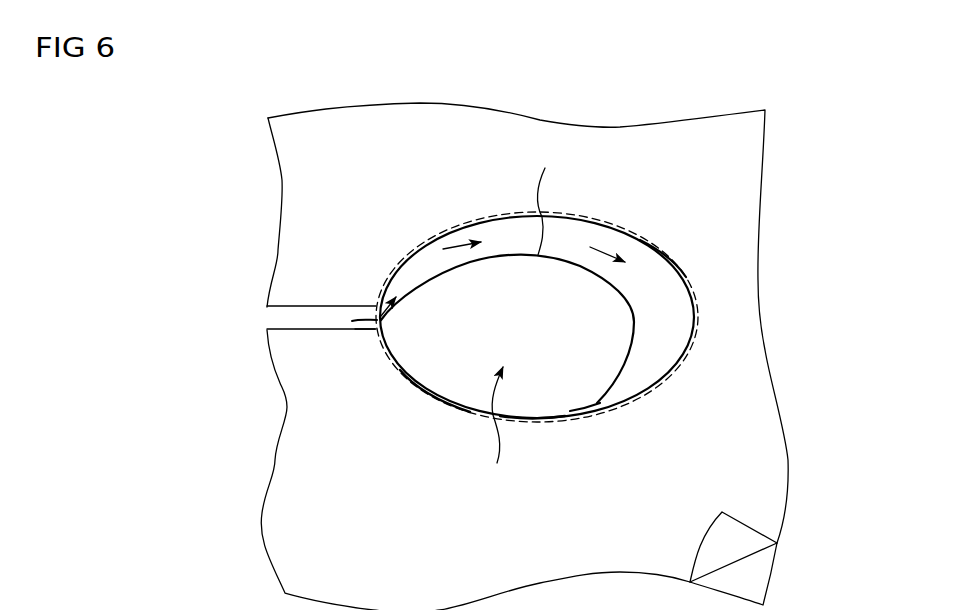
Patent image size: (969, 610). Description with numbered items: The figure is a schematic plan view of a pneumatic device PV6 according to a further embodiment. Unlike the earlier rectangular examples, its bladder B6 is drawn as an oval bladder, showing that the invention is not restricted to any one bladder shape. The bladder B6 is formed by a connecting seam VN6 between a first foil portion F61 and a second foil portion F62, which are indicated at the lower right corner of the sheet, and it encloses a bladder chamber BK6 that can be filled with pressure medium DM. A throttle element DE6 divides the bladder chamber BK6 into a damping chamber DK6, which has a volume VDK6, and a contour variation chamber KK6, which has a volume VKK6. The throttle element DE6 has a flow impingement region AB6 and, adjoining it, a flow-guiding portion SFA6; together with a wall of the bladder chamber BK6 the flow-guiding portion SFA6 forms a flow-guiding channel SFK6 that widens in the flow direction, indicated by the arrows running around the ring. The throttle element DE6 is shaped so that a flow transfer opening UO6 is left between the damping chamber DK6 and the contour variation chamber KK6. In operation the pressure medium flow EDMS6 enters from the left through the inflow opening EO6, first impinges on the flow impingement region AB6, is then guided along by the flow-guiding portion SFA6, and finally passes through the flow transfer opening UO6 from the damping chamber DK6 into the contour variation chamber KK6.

The pneumatic device PV6 is at (243, 98).
The damping chamber DK6 is at (696, 327).
The connecting seam VN6 is at (638, 258).
The bladder B6 is at (690, 261).
The volume of the damping chamber VDK6 is at (652, 358).
The flow transfer opening UO6 is at (598, 403).
The contour variation chamber KK6 is at (549, 423).
The bladder chamber BK6 is at (497, 431).
The volume of the contour variation chamber VKK6 is at (447, 372).
The flow impingement region AB6 is at (404, 319).
The pressure medium DM is at (270, 318).
The pressure medium flow EDMS6 is at (378, 316).
The inflow opening EO6 is at (377, 326).
The flow-guiding channel SFK6 is at (521, 222).
The throttle element DE6 is at (552, 199).
The flow-guiding portion SFA6 is at (569, 258).
The second foil portion F62 is at (733, 535).
The first foil portion F61 is at (758, 575).